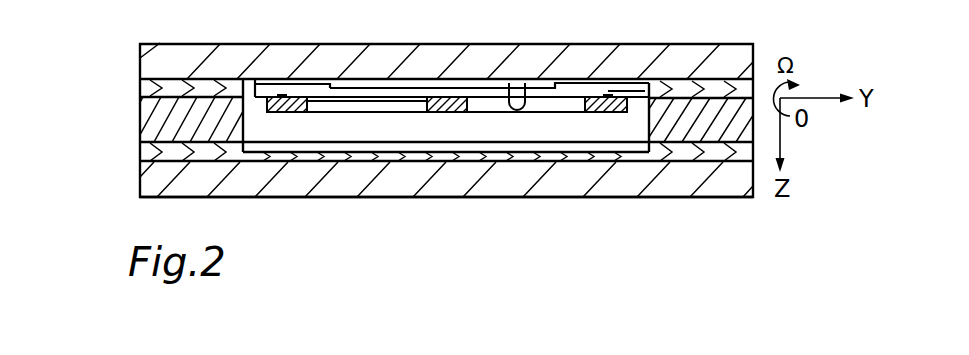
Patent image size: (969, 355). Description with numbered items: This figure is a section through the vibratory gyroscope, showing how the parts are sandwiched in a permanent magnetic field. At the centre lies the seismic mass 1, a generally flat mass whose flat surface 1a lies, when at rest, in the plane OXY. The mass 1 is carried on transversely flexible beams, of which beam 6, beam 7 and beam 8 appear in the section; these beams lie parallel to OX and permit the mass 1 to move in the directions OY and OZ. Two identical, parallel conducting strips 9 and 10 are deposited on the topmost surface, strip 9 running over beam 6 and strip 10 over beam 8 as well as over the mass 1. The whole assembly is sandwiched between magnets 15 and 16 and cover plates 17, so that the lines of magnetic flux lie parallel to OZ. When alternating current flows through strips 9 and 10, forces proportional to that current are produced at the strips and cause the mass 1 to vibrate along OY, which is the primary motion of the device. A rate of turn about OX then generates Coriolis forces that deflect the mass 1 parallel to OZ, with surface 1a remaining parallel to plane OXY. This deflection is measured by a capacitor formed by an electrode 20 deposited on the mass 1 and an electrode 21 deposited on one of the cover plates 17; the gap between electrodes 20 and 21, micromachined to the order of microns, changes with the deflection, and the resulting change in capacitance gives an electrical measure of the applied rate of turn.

The seismic mass 1 is at (733, 117).
The flat surface 1a is at (255, 84).
The beam 6 is at (290, 113).
The beam 7 is at (437, 113).
The beam 8 is at (605, 98).
The conducting strip 9 is at (282, 94).
The conducting strip 10 is at (607, 94).
The magnet 15 is at (702, 45).
The magnet 16 is at (705, 198).
The cover plates 17 is at (148, 152).
The electrode 20 is at (375, 96).
The electrode 21 is at (508, 84).